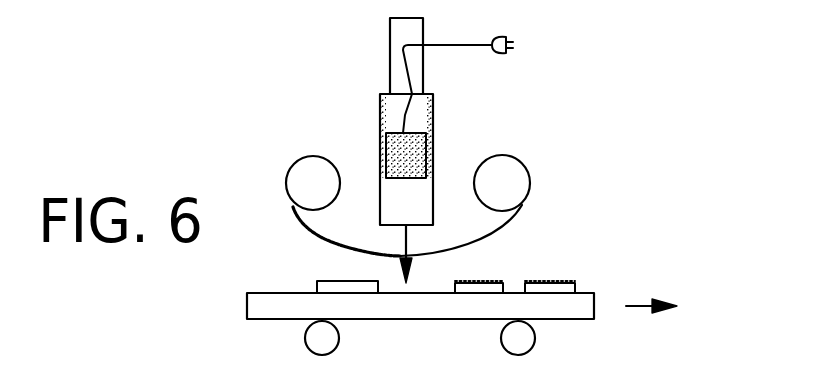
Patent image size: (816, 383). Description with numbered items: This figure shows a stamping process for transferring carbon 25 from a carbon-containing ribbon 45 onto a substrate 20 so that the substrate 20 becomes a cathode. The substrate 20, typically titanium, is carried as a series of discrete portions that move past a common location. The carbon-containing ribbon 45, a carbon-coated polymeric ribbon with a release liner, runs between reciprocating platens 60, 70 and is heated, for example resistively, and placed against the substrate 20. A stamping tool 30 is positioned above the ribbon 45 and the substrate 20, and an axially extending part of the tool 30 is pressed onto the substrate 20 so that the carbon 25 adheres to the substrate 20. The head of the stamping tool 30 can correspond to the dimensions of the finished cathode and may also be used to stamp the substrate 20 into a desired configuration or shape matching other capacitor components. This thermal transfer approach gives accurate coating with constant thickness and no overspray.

The substrate 20 is at (362, 294).
The carbon 25 is at (348, 240).
The stamping tool 30 is at (441, 142).
The carbon-containing ribbon 45 is at (490, 243).
The reciprocating platen 60 is at (287, 183).
The reciprocating platen 70 is at (508, 157).